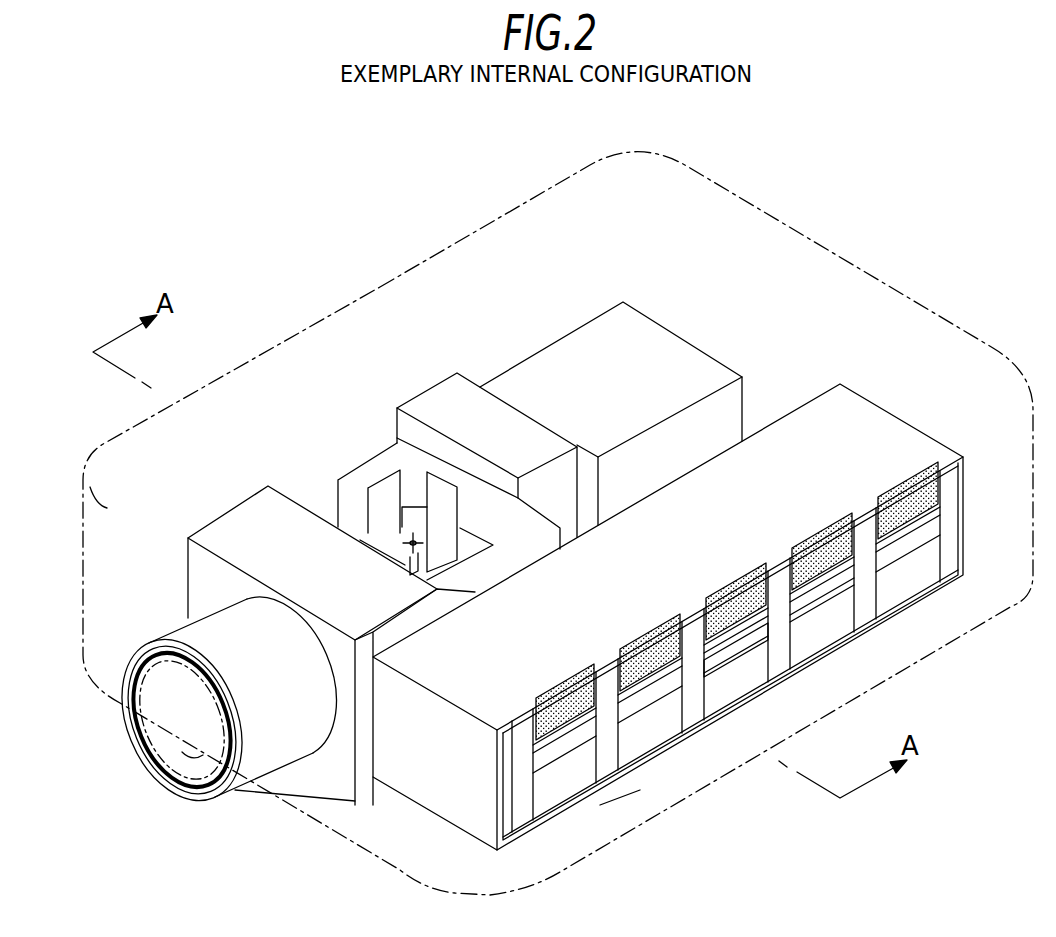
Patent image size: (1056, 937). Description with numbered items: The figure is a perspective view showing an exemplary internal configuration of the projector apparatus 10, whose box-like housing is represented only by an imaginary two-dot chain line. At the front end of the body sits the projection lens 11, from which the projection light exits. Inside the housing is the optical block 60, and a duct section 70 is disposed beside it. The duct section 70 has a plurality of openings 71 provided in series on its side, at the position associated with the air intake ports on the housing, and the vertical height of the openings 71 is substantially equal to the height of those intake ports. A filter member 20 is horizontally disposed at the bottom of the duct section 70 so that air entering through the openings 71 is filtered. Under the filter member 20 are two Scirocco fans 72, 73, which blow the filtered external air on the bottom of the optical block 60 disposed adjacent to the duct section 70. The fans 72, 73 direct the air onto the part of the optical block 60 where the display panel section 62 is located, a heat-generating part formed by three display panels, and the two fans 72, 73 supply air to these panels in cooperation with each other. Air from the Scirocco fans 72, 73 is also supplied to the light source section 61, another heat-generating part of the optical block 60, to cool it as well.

The projector apparatus 10 is at (805, 237).
The projection lens 11 is at (143, 712).
The filter member 20 is at (743, 632).
The optical block 60 is at (438, 402).
The light source section 61 is at (663, 352).
The display panel section 62 is at (352, 483).
The duct section 70 is at (880, 437).
The openings 71 is at (553, 783).
The Scirocco fan 72 is at (848, 610).
The Scirocco fan 73 is at (642, 790).